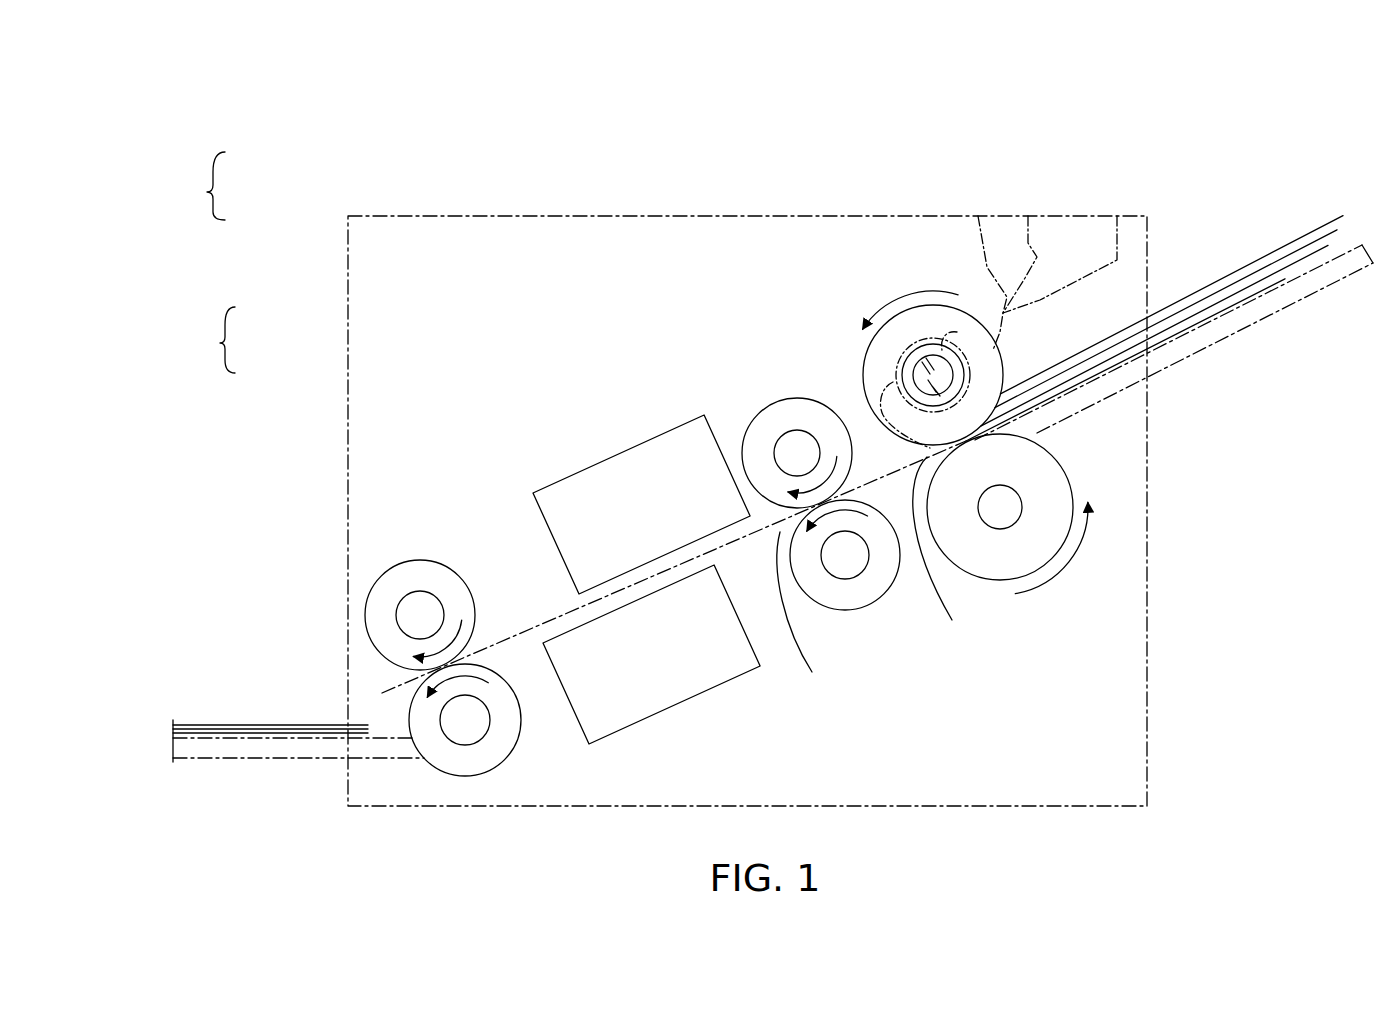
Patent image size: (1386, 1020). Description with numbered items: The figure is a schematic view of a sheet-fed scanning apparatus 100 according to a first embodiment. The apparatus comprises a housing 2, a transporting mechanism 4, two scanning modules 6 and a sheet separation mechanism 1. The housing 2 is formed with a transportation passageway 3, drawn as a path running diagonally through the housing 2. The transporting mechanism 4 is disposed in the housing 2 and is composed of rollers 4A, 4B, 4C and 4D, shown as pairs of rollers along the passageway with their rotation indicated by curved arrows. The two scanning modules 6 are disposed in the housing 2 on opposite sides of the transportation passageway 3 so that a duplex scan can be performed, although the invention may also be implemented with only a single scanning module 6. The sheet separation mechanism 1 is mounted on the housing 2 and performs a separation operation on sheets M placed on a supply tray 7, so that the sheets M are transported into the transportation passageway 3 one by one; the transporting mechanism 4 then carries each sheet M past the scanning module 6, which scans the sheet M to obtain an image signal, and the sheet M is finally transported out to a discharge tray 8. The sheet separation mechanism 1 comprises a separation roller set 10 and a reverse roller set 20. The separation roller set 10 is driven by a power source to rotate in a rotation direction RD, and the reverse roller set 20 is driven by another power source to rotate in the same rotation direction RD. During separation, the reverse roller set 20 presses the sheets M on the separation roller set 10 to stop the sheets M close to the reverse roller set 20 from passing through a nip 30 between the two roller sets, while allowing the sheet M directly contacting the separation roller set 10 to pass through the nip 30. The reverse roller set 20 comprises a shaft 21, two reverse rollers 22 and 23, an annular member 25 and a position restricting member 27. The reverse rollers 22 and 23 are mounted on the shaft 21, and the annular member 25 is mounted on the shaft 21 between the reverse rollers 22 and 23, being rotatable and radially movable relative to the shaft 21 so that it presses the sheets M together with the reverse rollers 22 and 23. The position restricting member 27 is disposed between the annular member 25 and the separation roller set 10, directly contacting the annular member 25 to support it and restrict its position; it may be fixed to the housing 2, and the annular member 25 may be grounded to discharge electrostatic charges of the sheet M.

The sheet-fed scanning apparatus 100 is at (713, 129).
The sheet separation mechanism 1 is at (231, 342).
The housing 2 is at (877, 214).
The transportation passageway 3 is at (799, 617).
The transporting mechanism 4 is at (220, 186).
The roller 4A is at (775, 412).
The roller 4B is at (865, 597).
The roller 4C is at (405, 585).
The roller 4D is at (486, 763).
The scanning module 6 is at (606, 467).
The supply tray 7 is at (1217, 347).
The discharge tray 8 is at (245, 757).
The separation roller set 10 is at (1008, 568).
The reverse roller set 20 is at (987, 357).
The shaft 21 is at (923, 367).
The reverse roller 22 is at (859, 357).
The reverse roller 23 is at (905, 366).
The annular member 25 is at (952, 322).
The position restricting member 27 is at (978, 215).
The nip 30 is at (938, 557).
The sheet M is at (227, 722).
The rotation direction RD is at (996, 432).